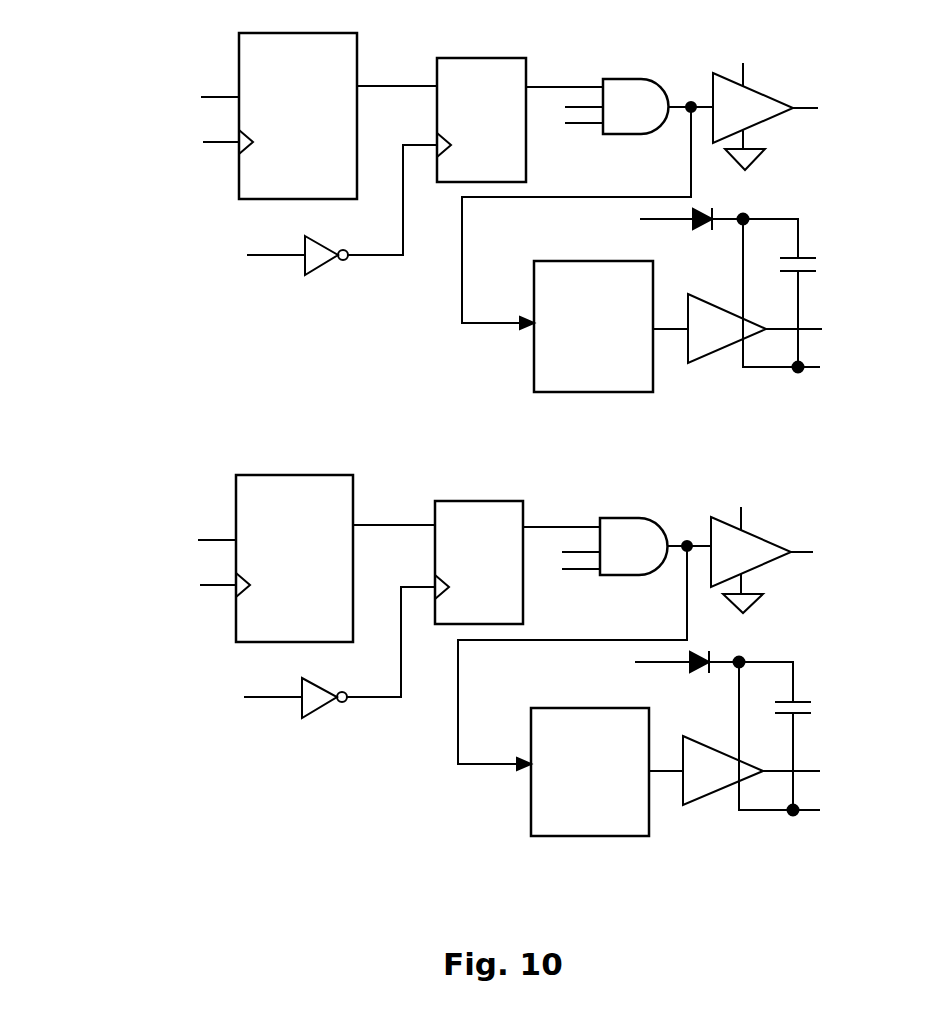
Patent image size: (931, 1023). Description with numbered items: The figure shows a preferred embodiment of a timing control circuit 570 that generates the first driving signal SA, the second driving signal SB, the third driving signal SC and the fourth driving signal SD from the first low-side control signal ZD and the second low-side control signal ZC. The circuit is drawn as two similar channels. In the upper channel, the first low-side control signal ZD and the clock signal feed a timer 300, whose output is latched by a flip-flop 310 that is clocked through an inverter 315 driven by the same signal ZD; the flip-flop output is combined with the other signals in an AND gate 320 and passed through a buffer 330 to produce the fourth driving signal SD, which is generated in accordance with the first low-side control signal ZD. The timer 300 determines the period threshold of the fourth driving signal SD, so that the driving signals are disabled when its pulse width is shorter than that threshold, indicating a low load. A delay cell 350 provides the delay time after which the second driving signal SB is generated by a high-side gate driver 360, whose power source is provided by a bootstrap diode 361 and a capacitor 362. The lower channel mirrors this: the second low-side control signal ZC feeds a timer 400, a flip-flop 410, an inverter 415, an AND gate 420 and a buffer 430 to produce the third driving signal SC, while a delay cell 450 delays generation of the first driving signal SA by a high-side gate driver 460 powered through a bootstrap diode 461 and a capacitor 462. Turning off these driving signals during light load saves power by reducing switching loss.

The timing control circuit 570 is at (121, 50).
The timer 300 is at (313, 150).
The D flip-flop 310 is at (500, 147).
The inverter 315 is at (322, 247).
The AND gate 320 is at (629, 79).
The output buffer 330 is at (763, 125).
The delay cell 350 is at (607, 351).
The high-side gate driver 360 is at (703, 354).
The bootstrap diode 361 is at (700, 228).
The capacitor 362 is at (797, 293).
The timer 400 is at (310, 592).
The D flip-flop 410 is at (496, 590).
The inverter 415 is at (322, 690).
The AND gate 420 is at (629, 518).
The output buffer 430 is at (760, 565).
The delay cell 450 is at (605, 794).
The high-side gate driver 460 is at (700, 797).
The bootstrap diode 461 is at (697, 671).
The capacitor 462 is at (794, 736).